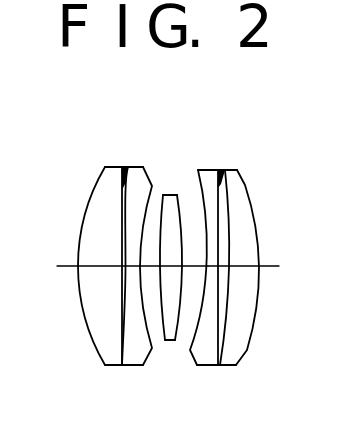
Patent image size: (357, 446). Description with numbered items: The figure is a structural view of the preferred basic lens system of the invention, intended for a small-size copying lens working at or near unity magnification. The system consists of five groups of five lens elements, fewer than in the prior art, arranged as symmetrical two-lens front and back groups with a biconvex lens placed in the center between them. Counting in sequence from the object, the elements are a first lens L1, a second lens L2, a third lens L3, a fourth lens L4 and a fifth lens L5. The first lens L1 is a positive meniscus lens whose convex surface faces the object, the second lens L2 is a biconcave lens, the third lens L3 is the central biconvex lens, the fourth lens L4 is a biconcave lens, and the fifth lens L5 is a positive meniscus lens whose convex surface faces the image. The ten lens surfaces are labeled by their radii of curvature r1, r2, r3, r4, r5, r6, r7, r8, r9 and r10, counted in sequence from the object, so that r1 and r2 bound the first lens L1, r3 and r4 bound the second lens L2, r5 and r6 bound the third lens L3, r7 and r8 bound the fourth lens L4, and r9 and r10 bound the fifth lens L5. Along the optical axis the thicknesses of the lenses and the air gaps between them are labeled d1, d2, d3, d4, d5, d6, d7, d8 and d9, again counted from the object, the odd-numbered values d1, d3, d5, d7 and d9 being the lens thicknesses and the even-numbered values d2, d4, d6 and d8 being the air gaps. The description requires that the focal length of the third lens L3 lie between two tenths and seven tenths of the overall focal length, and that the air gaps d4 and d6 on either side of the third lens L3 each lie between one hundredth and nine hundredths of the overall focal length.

The first lens L1 is at (92, 246).
The second lens L2 is at (131, 258).
The third lens L3 is at (165, 251).
The fourth lens L4 is at (202, 263).
The fifth lens L5 is at (248, 253).
The radius of curvature of first lens surface r1 is at (101, 186).
The radius of curvature of second lens surface r2 is at (121, 174).
The radius of curvature of third lens surface r3 is at (129, 170).
The radius of curvature of fourth lens surface r4 is at (141, 167).
The radius of curvature of fifth lens surface r5 is at (162, 194).
The radius of curvature of sixth lens surface r6 is at (180, 194).
The radius of curvature of seventh lens surface r7 is at (199, 180).
The radius of curvature of eighth lens surface r8 is at (217, 173).
The radius of curvature of ninth lens surface r9 is at (225, 170).
The radius of curvature of tenth lens surface r10 is at (245, 180).
The thickness of first lens d1 is at (92, 266).
The air gap between first and second lenses d2 is at (121, 266).
The thickness of second lens d3 is at (133, 266).
The air gap between second and third lenses d4 is at (147, 266).
The thickness of third lens d5 is at (168, 266).
The air gap between third and fourth lenses d6 is at (190, 266).
The thickness of fourth lens d7 is at (211, 266).
The air gap between fourth and fifth lenses d8 is at (224, 266).
The thickness of fifth lens d9 is at (250, 266).